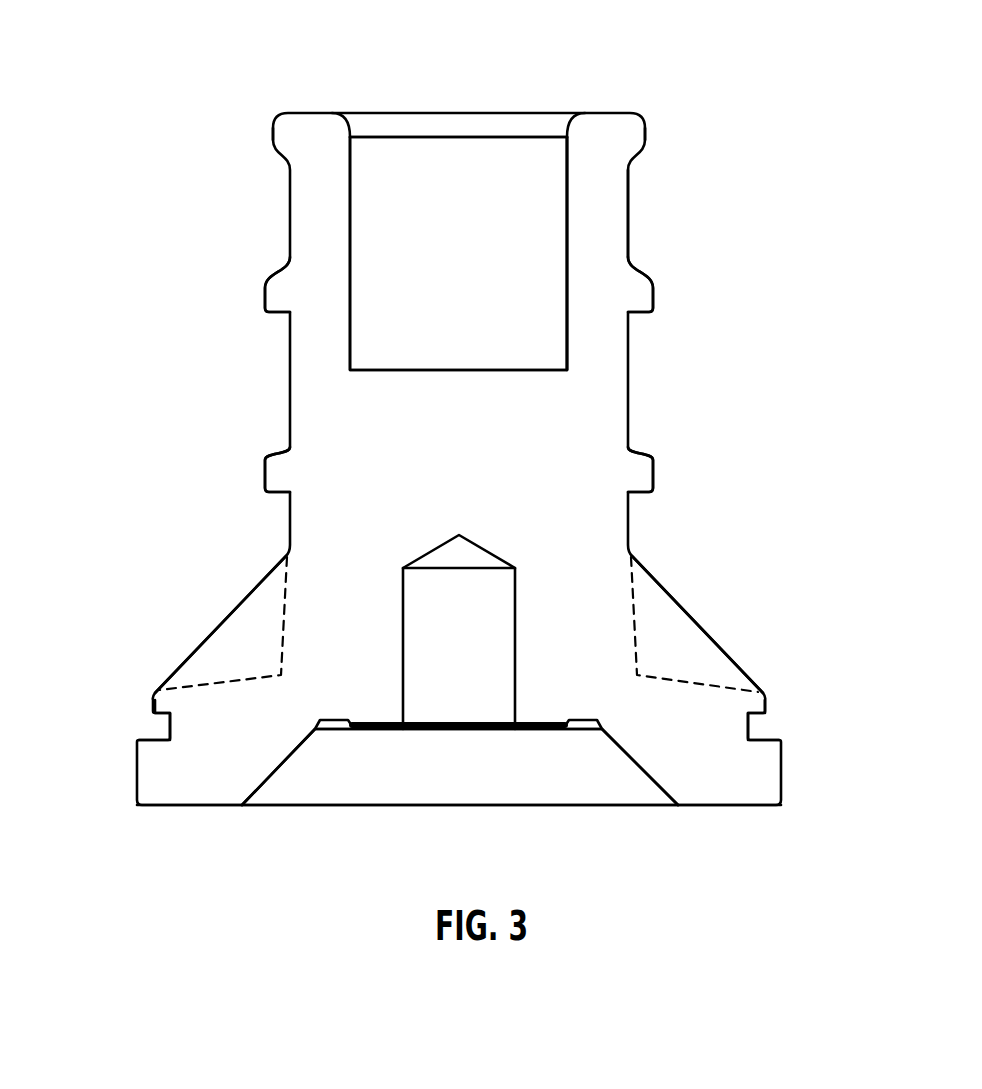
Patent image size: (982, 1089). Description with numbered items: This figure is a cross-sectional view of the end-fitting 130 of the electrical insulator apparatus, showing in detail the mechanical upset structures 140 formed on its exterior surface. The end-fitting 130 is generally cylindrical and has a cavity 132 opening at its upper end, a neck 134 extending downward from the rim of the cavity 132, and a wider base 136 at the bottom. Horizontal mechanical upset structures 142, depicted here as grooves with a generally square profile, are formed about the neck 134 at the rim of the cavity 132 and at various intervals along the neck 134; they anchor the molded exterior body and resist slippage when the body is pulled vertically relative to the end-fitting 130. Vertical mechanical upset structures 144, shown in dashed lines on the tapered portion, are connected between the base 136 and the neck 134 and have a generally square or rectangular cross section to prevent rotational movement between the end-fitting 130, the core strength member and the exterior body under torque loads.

The end-fitting 130 is at (470, 451).
The cavity 132 is at (482, 190).
The neck 134 is at (602, 220).
The base 136 is at (728, 770).
The mechanical upset structures 140 is at (172, 563).
The horizontal mechanical upset structures 142 is at (283, 135).
The vertical mechanical upset structures 144 is at (227, 653).